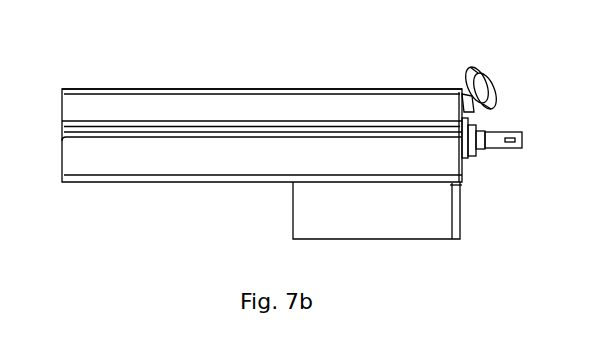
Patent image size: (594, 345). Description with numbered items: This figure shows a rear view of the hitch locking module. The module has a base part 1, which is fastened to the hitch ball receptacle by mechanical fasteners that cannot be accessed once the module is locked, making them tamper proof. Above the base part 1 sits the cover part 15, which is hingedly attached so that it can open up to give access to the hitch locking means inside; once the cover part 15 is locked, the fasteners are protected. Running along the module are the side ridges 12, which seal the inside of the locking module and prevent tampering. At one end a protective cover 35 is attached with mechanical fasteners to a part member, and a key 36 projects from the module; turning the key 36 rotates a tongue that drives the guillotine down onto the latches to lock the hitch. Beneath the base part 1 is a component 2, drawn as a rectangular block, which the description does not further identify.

The base part 1 is at (142, 182).
The base box 2 is at (407, 217).
The side ridges 12 is at (118, 123).
The cover part 15 is at (197, 105).
The protective cover 35 is at (482, 72).
The key 36 is at (522, 148).